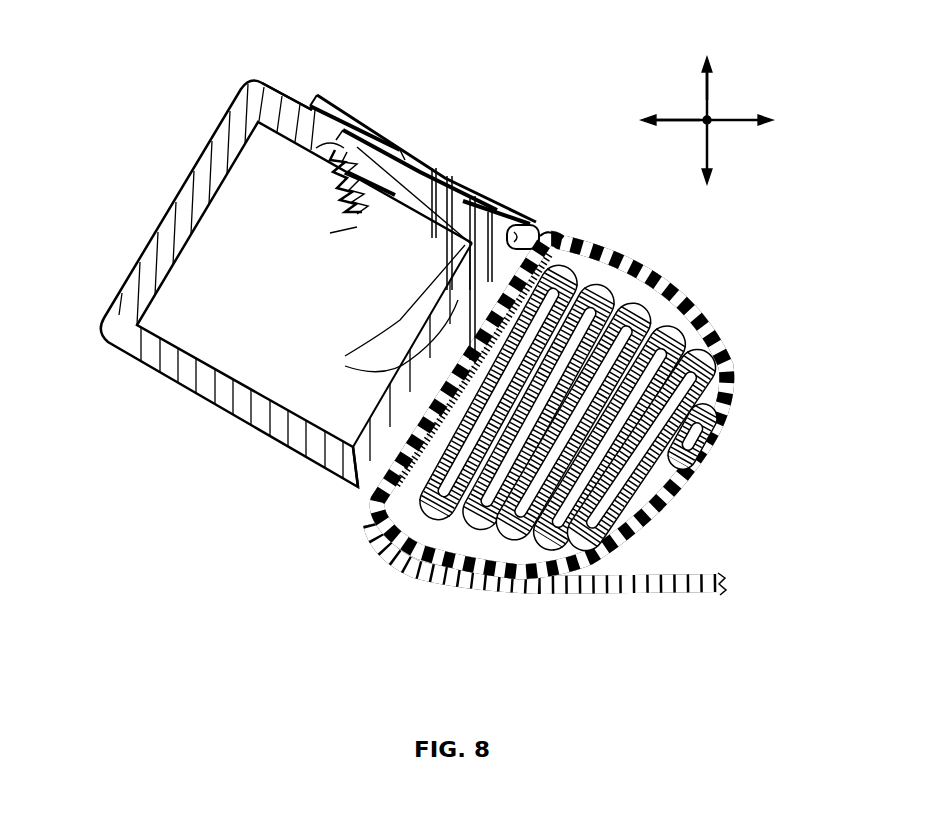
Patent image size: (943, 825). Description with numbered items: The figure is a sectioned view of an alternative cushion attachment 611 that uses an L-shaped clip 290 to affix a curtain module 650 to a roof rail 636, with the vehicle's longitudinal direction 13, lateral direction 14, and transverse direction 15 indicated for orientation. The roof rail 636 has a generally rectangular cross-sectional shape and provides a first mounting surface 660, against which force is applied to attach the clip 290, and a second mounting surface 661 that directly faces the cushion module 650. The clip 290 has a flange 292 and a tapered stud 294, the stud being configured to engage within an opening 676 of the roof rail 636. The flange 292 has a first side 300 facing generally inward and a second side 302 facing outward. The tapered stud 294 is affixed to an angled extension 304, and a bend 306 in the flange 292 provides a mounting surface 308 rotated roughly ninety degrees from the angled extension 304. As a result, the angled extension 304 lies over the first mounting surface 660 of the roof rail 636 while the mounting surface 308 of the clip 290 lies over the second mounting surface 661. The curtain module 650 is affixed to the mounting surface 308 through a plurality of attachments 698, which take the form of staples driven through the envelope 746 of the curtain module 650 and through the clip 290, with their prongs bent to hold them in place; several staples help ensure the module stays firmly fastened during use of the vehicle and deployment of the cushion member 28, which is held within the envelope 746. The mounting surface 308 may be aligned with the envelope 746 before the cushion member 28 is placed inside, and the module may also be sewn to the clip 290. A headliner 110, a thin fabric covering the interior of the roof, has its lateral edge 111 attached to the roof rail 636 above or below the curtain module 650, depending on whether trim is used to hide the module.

The longitudinal direction 13 is at (709, 117).
The lateral direction 14 is at (681, 123).
The transverse direction 15 is at (705, 82).
The cushion member 28 is at (675, 360).
The headliner 110 is at (699, 572).
The lateral edge 111 is at (355, 486).
The L-shaped clip 290 is at (275, 220).
The flange 292 is at (396, 212).
The tapered stud 294 is at (322, 212).
The first side 300 is at (447, 232).
The second side 302 is at (462, 183).
The angled extension 304 is at (475, 207).
The bend 306 is at (544, 234).
The mounting surface 308 is at (554, 235).
The cushion attachment 611 is at (356, 250).
The roof rail 636 is at (273, 279).
The curtain module 650 is at (612, 360).
The first mounting surface 660 is at (296, 100).
The second mounting surface 661 is at (534, 232).
The opening 676 is at (330, 148).
The attachments 698 is at (388, 308).
The envelope 746 is at (703, 452).